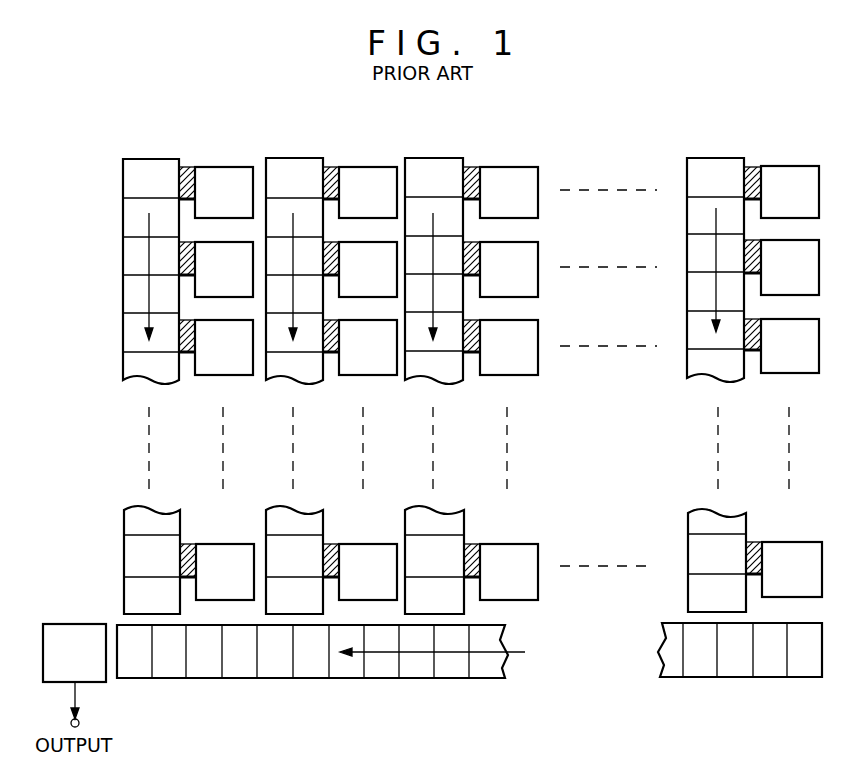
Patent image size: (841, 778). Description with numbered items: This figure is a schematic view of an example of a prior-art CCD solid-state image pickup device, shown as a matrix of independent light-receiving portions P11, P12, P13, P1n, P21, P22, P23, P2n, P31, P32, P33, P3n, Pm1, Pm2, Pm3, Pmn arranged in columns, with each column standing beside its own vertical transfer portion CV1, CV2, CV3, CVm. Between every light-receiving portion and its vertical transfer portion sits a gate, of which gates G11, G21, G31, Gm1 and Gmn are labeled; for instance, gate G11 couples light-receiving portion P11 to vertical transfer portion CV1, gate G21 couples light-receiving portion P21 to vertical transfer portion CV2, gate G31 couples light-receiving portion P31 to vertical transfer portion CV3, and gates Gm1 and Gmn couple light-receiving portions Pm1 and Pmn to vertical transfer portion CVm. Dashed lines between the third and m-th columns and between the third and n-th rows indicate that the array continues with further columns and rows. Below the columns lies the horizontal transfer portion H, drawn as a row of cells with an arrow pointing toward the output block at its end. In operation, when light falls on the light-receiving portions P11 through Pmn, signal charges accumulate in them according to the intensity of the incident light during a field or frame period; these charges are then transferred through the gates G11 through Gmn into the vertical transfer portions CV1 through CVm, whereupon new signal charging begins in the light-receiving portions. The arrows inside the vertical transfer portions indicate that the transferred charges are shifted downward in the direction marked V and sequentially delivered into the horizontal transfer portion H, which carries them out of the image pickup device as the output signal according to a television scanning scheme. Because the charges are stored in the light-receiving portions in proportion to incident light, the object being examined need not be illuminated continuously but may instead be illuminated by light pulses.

The vertical shift register V is at (128, 290).
The vertical transfer portion CV1 is at (148, 159).
The vertical transfer portion CV2 is at (291, 158).
The vertical transfer portion CV3 is at (433, 158).
The vertical transfer portion CVm is at (716, 158).
The gate G11 is at (186, 167).
The gate G21 is at (330, 167).
The gate G31 is at (471, 167).
The gate Gm1 is at (762, 167).
The gate Gmn is at (748, 542).
The light-receiving portion P11 is at (224, 192).
The light-receiving portion P12 is at (224, 269).
The light-receiving portion P13 is at (224, 347).
The light-receiving portion P1n is at (225, 572).
The light-receiving portion P21 is at (368, 192).
The light-receiving portion P22 is at (368, 269).
The light-receiving portion P23 is at (368, 347).
The light-receiving portion P2n is at (368, 572).
The light-receiving portion P31 is at (509, 192).
The light-receiving portion P32 is at (509, 269).
The light-receiving portion P33 is at (509, 347).
The light-receiving portion P3n is at (509, 572).
The light-receiving portion Pm1 is at (790, 192).
The light-receiving portion Pm2 is at (790, 267).
The light-receiving portion Pm3 is at (790, 346).
The light-receiving portion Pmn is at (792, 569).
The horizontal transfer portion H is at (420, 668).